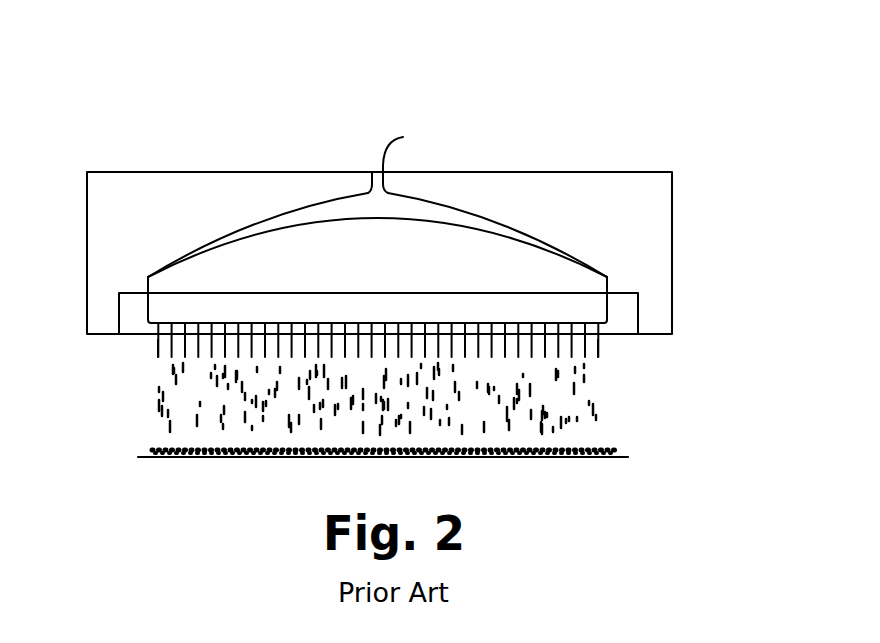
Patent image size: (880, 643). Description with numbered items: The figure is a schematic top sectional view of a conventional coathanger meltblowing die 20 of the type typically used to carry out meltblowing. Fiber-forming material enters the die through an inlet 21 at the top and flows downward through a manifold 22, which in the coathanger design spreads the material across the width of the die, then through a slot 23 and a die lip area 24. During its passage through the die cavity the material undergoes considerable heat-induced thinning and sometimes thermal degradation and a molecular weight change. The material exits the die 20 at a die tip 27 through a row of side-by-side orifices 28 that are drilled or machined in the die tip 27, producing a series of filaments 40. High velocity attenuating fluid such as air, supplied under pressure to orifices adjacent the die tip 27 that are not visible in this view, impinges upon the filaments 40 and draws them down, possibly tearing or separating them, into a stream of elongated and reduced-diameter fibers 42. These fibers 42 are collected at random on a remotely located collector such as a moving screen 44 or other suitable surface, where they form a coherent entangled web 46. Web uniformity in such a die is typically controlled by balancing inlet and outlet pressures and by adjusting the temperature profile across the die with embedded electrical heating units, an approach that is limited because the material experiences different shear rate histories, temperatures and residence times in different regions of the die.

The coathanger die 20 is at (637, 140).
The inlet 21 is at (409, 157).
The manifold 22 is at (472, 213).
The slot 23 is at (505, 272).
The die lip area 24 is at (600, 315).
The die tip 27 is at (577, 343).
The orifices 28 is at (170, 322).
The filaments 40 is at (157, 346).
The fibers 42 is at (152, 385).
The moving screen 44 is at (600, 458).
The web 46 is at (602, 453).